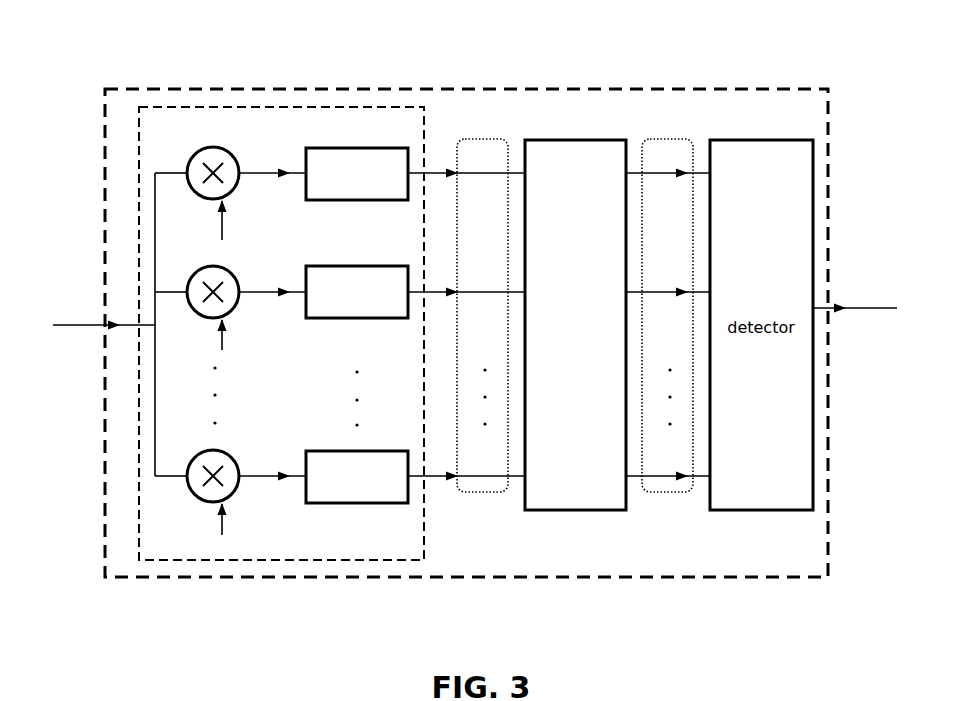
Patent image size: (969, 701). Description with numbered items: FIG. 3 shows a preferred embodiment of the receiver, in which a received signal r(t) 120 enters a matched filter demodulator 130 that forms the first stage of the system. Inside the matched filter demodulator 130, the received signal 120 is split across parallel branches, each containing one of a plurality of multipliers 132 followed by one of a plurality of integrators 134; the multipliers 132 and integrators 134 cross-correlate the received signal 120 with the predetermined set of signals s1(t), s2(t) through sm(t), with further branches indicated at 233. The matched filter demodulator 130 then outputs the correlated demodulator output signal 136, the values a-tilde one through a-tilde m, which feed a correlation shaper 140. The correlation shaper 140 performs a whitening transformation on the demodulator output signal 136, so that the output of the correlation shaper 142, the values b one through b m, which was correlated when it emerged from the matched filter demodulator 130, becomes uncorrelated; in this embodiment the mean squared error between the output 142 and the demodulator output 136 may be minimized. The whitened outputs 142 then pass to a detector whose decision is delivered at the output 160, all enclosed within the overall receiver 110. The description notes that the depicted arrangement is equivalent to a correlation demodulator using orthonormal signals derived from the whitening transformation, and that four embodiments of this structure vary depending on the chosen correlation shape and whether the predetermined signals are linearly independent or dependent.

The receiver / detection system 110 is at (643, 88).
The received signal r(t) 120 is at (70, 327).
The matched filter demodulator 130 is at (375, 102).
The multipliers 132 is at (197, 150).
The integrators 134 is at (317, 148).
The demodulator output signal 136 is at (474, 493).
The correlation shaper 140 is at (575, 325).
The output of the correlation shaper 142 is at (658, 493).
The detected symbol output s_k 160 is at (877, 310).
The correlator branches 233 is at (285, 396).